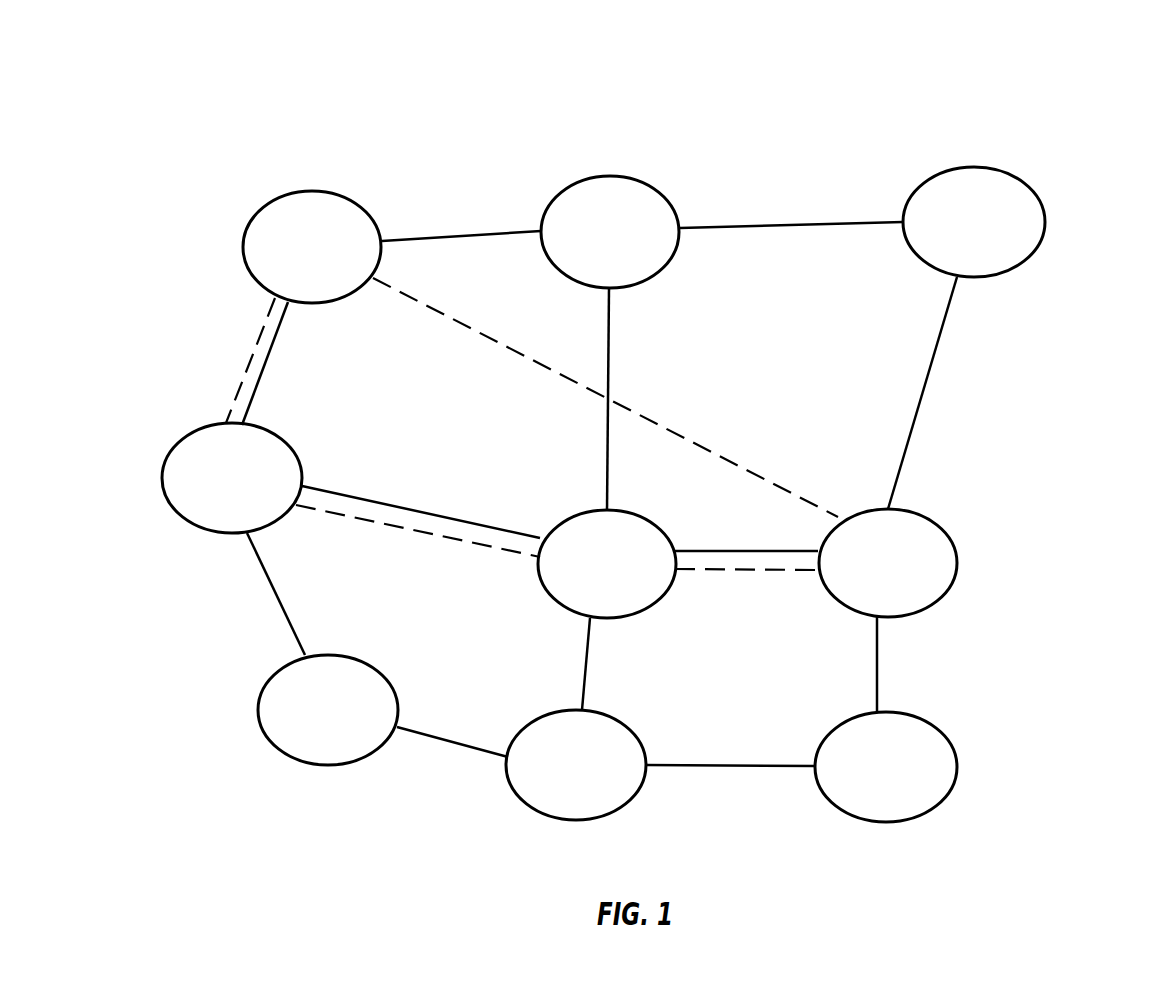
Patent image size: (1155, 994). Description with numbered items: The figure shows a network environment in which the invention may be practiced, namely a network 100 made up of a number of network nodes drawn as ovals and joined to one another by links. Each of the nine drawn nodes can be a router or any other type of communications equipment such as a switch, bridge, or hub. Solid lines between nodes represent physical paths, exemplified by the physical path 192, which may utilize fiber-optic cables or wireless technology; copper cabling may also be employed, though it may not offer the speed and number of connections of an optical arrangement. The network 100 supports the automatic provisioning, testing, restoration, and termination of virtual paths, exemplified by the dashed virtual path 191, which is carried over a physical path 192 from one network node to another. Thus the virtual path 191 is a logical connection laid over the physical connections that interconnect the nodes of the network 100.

The network 100 is at (808, 77).
The virtual path 191 is at (605, 397).
The physical path 192 is at (491, 455).